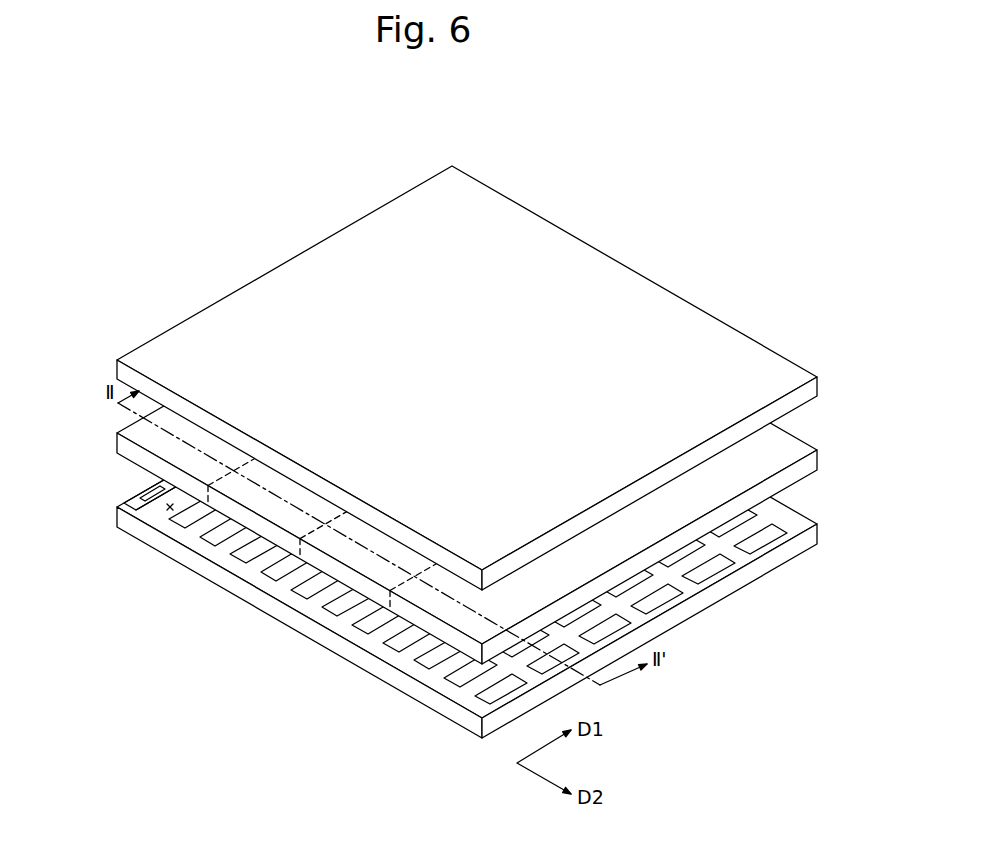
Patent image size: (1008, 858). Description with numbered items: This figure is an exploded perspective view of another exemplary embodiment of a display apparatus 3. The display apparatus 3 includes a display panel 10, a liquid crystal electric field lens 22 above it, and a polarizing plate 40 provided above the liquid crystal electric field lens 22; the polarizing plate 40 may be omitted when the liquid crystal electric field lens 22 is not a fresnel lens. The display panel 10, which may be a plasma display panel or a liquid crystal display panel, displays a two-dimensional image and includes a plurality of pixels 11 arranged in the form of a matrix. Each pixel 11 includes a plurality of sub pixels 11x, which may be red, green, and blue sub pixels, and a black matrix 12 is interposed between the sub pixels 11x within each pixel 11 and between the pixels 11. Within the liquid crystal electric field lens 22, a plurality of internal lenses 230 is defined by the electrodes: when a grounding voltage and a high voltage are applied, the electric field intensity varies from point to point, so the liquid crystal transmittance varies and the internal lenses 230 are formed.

The display apparatus 3 is at (431, 452).
The display panel 10 is at (186, 558).
The pixel 11 is at (137, 483).
The sub pixel 11x is at (126, 503).
The black matrix 12 is at (141, 514).
The liquid crystal electric field lens 22 is at (126, 423).
The internal lens 230 is at (127, 446).
The polarizing plate 40 is at (126, 376).